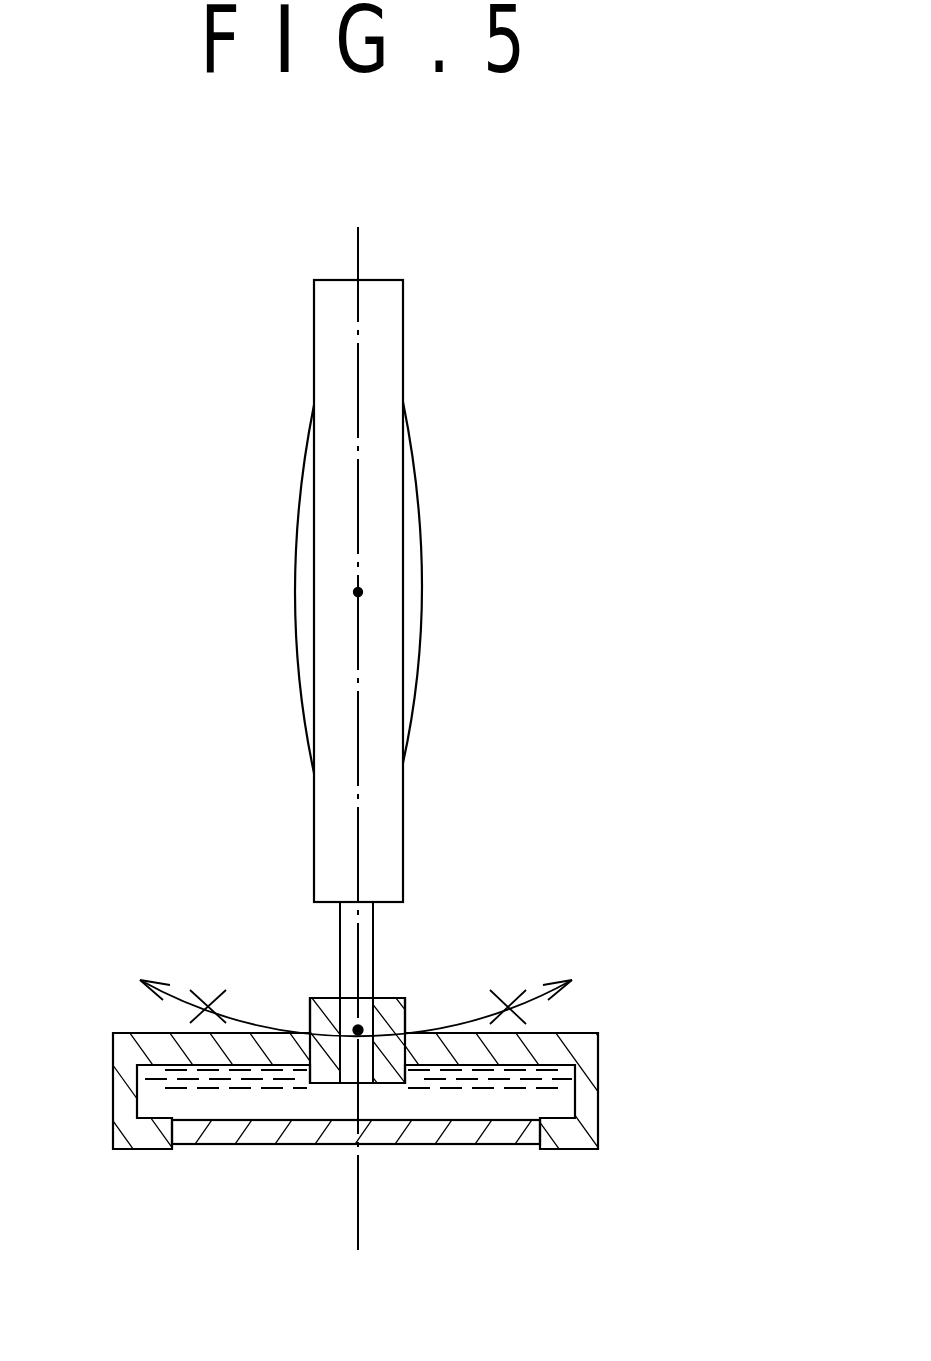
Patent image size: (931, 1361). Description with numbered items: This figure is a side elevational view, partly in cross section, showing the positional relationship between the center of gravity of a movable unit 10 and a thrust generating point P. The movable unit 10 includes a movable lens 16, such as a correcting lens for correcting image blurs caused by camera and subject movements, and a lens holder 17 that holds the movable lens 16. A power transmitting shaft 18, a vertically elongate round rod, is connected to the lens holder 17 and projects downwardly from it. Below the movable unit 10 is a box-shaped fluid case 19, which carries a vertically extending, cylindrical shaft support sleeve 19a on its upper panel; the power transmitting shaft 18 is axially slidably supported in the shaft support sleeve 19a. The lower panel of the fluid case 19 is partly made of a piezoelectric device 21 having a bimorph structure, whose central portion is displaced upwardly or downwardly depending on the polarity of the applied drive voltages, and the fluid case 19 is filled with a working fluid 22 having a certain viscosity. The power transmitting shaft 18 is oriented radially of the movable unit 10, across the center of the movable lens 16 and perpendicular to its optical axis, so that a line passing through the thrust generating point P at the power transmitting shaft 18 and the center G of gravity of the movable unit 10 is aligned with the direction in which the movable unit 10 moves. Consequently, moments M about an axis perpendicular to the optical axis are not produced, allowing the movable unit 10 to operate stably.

The movable unit 10 is at (403, 301).
The lens holder 17 is at (403, 405).
The movable lens 16 is at (422, 525).
The center of gravity G is at (358, 592).
The power transmitting shaft 18 is at (360, 950).
The fluid case 19 is at (133, 1148).
The shaft support sleeve 19a is at (310, 1008).
The piezoelectric device 21 is at (303, 1148).
The working fluid 22 is at (480, 1148).
The thrust generating point P is at (358, 1030).
The moments M is at (364, 987).